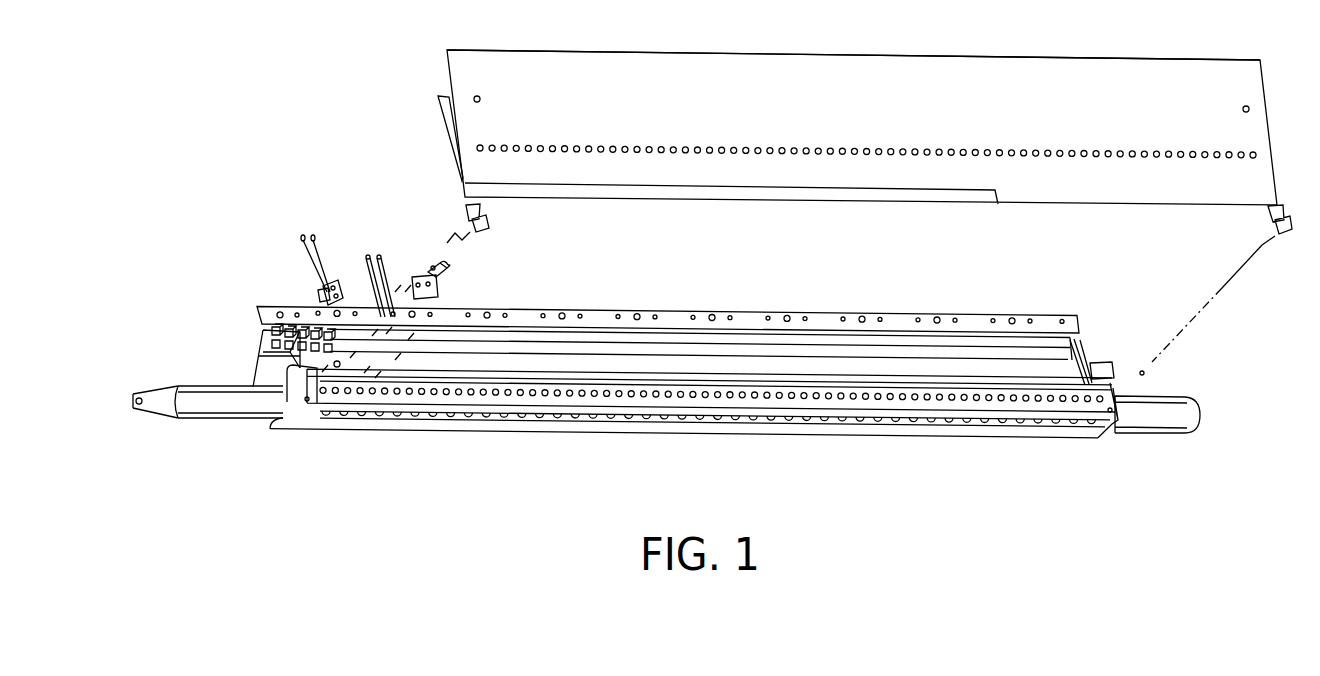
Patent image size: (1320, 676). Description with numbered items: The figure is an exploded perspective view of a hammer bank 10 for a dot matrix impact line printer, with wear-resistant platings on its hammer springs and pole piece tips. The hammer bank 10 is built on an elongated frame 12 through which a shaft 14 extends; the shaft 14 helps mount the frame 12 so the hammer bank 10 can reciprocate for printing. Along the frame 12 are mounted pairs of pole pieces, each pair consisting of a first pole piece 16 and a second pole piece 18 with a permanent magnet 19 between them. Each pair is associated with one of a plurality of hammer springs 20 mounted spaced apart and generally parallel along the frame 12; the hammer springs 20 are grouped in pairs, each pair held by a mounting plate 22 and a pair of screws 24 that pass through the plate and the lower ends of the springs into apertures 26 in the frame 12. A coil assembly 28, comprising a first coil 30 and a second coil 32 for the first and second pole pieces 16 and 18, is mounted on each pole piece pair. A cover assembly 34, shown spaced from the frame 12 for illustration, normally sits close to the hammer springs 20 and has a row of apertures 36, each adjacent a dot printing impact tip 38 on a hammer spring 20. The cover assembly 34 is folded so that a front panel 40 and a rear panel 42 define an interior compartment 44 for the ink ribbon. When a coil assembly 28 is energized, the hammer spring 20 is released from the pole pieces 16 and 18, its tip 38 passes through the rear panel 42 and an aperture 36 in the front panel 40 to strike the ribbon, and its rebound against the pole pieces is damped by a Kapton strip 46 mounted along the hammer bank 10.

The hammer bank 10 is at (300, 432).
The frame 12 is at (1020, 433).
The shaft 14 is at (1140, 452).
The first pole piece 16 is at (290, 342).
The second pole piece 18 is at (268, 358).
The permanent magnet 19 is at (285, 352).
The hammer spring 20 is at (378, 292).
The mounting plate 22 is at (440, 295).
The screws 24 is at (448, 271).
The apertures 26 is at (358, 396).
The coil assembly 28 is at (337, 288).
The first coil 30 is at (322, 291).
The second coil 32 is at (325, 310).
The cover assembly 34 is at (1245, 133).
The apertures 36 is at (1099, 158).
The dot printing impact tip 38 is at (379, 255).
The front panel 40 is at (447, 53).
The rear panel 42 is at (440, 97).
The interior compartment 44 is at (447, 112).
The Kapton strip 46 is at (898, 370).